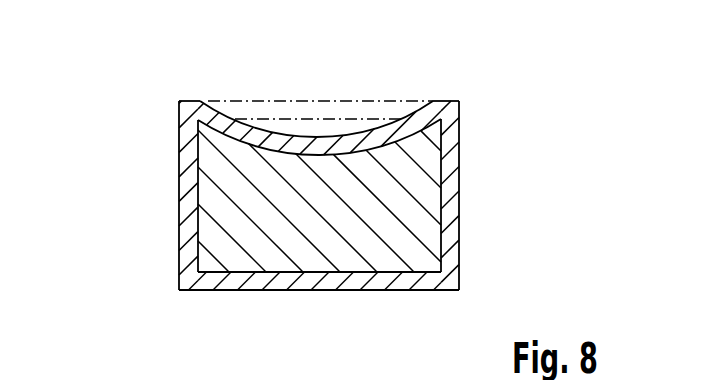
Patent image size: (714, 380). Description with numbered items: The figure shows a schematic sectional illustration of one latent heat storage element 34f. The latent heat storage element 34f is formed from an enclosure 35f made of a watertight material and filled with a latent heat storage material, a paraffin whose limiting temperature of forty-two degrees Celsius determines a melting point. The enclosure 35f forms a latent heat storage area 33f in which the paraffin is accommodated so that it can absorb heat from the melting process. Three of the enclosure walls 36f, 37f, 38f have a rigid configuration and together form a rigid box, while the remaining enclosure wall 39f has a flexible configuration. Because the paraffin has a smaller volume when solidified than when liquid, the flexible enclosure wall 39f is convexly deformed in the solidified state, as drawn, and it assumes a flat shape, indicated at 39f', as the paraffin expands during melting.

The latent heat storage area 33f is at (292, 202).
The latent heat storage element 34f is at (504, 136).
The enclosure 35f is at (136, 135).
The enclosure wall 36f is at (447, 187).
The enclosure wall 37f is at (358, 275).
The enclosure wall 38f is at (188, 187).
The flexible enclosure wall 39f is at (319, 92).
The flat top wall position (alternative) 39f' is at (319, 74).